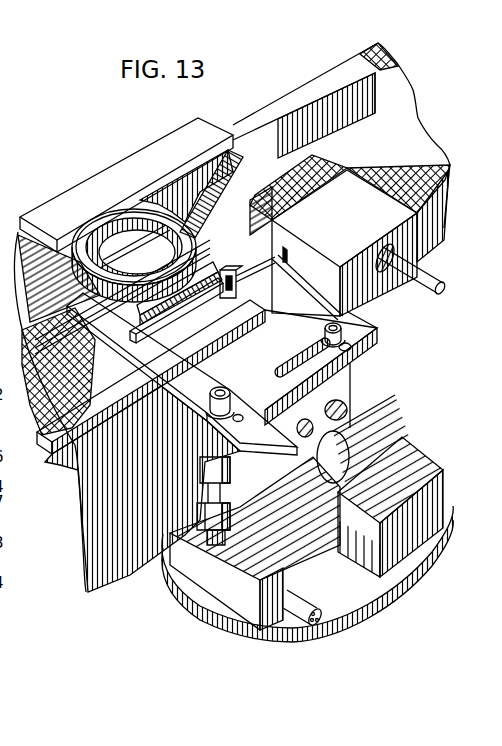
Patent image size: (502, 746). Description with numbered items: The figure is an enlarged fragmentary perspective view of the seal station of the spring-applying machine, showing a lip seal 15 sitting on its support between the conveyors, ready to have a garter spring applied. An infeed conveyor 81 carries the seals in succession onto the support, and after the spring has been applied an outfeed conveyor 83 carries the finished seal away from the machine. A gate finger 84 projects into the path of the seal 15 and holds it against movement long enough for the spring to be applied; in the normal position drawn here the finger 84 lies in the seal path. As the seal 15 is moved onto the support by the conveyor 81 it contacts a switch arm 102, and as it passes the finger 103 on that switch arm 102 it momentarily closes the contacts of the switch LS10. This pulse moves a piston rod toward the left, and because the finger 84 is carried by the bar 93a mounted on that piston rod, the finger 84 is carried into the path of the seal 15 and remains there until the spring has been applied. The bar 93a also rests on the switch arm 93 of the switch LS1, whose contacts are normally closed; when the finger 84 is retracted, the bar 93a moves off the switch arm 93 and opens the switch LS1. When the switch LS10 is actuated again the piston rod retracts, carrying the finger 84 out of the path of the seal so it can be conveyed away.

The infeed conveyor 81 is at (320, 83).
The lip seal 15 is at (203, 240).
The finger 103 is at (197, 264).
The switch LS10 is at (423, 237).
The gate finger 84 is at (100, 308).
The switch arm 102 is at (190, 310).
The outfeed conveyor 83 is at (43, 410).
The bar 93a is at (260, 503).
The switch arm 93 is at (187, 517).
The switch LS1 is at (250, 613).